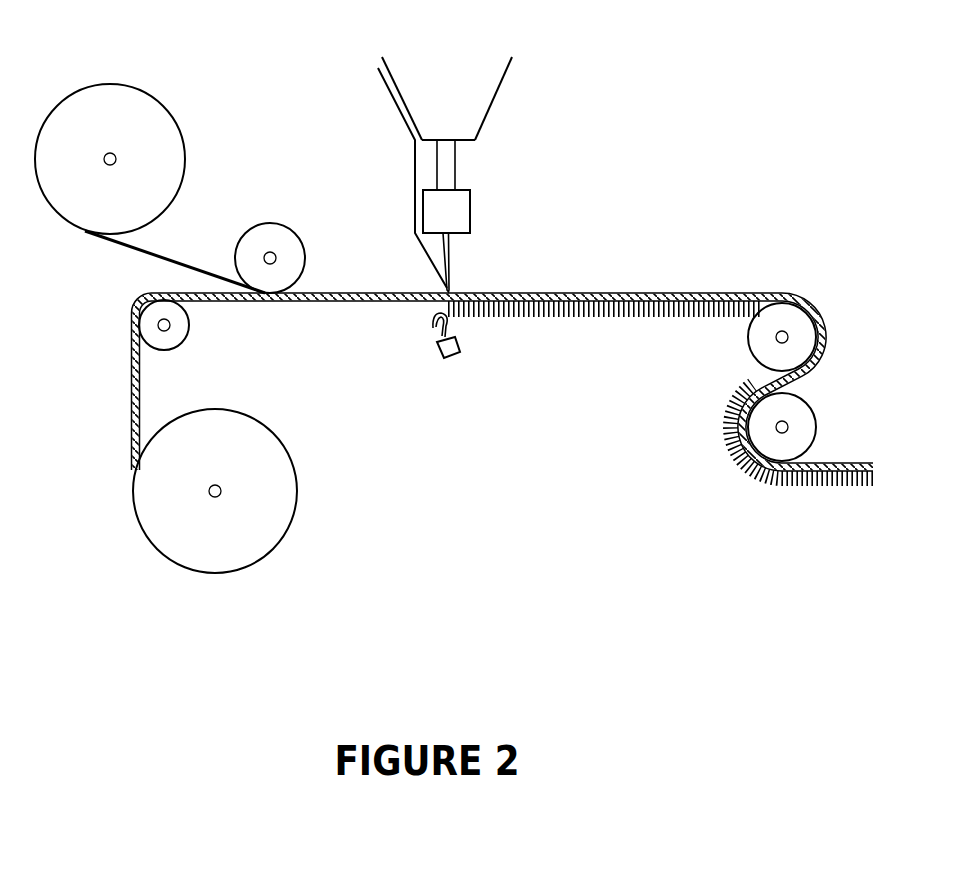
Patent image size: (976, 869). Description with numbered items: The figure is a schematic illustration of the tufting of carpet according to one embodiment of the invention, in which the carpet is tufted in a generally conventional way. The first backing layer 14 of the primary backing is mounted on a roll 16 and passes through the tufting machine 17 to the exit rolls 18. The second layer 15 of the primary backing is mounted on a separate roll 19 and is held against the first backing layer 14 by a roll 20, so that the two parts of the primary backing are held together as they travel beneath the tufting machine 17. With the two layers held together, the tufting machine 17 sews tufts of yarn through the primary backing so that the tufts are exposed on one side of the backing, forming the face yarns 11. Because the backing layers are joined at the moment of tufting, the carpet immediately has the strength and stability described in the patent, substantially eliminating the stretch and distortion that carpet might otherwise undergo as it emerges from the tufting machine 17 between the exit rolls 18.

The face yarns 11 is at (535, 330).
The first backing layer 14 is at (360, 300).
The second layer 15 is at (147, 253).
The roll 16 is at (162, 500).
The tufting machine 17 is at (502, 141).
The exit rolls 18 is at (798, 410).
The roll 19 is at (86, 117).
The roll 20 is at (265, 238).